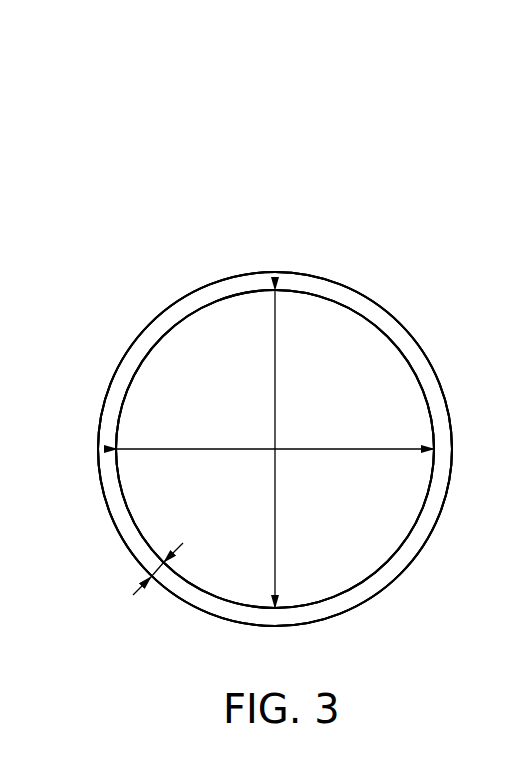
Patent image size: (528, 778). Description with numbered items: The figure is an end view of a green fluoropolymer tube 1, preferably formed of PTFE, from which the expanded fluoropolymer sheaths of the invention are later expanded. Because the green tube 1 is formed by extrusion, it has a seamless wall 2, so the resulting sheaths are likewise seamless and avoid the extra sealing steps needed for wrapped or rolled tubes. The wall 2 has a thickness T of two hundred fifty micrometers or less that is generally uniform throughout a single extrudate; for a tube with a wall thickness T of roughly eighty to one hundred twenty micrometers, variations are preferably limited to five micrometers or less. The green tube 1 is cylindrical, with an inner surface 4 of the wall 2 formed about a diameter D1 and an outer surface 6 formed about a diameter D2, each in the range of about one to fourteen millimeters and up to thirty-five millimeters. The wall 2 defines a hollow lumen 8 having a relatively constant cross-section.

The green fluoropolymer tube 1 is at (399, 279).
The wall 2 is at (443, 393).
The inner surface 4 is at (221, 596).
The outer surface 6 is at (409, 568).
The hollow lumen 8 is at (357, 508).
The wall thickness T is at (147, 580).
The inner surface diameter D1 is at (207, 449).
The outer surface diameter D2 is at (276, 372).